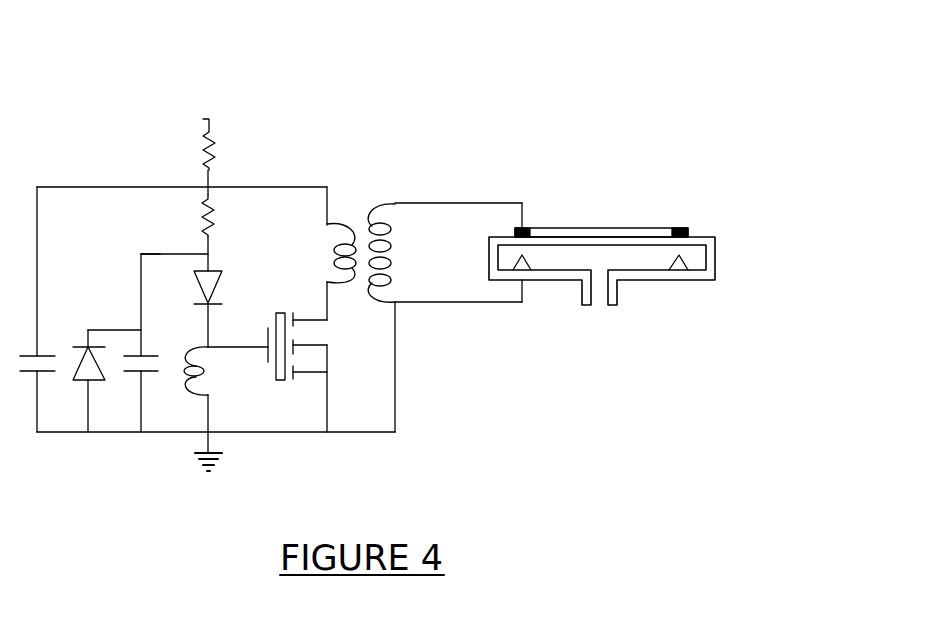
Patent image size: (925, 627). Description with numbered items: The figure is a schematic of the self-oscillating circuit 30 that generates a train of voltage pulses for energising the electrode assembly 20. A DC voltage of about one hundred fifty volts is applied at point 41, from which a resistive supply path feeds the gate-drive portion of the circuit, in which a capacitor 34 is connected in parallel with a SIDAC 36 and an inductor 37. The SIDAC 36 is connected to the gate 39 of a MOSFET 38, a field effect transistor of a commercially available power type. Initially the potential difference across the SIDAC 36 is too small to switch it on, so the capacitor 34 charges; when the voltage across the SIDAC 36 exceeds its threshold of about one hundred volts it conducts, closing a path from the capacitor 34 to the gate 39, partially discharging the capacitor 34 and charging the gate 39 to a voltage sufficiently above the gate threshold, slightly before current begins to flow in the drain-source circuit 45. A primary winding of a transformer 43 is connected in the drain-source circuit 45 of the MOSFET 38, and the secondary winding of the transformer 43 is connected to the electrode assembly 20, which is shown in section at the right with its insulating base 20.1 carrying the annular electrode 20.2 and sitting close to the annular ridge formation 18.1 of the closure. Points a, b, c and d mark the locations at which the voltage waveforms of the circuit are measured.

The self-oscillating circuit 30 is at (422, 108).
The point 41 is at (213, 120).
The SIDAC 36 is at (222, 283).
The capacitor 34 is at (142, 350).
The inductor 37 is at (200, 400).
The gate 39 is at (248, 350).
The MOSFET 38 is at (352, 354).
The transformer 43 is at (416, 200).
The drain-source circuit 45 is at (322, 207).
The electrode assembly 20 is at (681, 260).
The insulating disc or base 20.1 is at (705, 277).
The annular electrode 20.2 is at (673, 228).
The annular ridge formation 18.1 is at (680, 268).
The point a is at (157, 252).
The point b is at (222, 343).
The point c is at (330, 196).
The point d is at (430, 200).